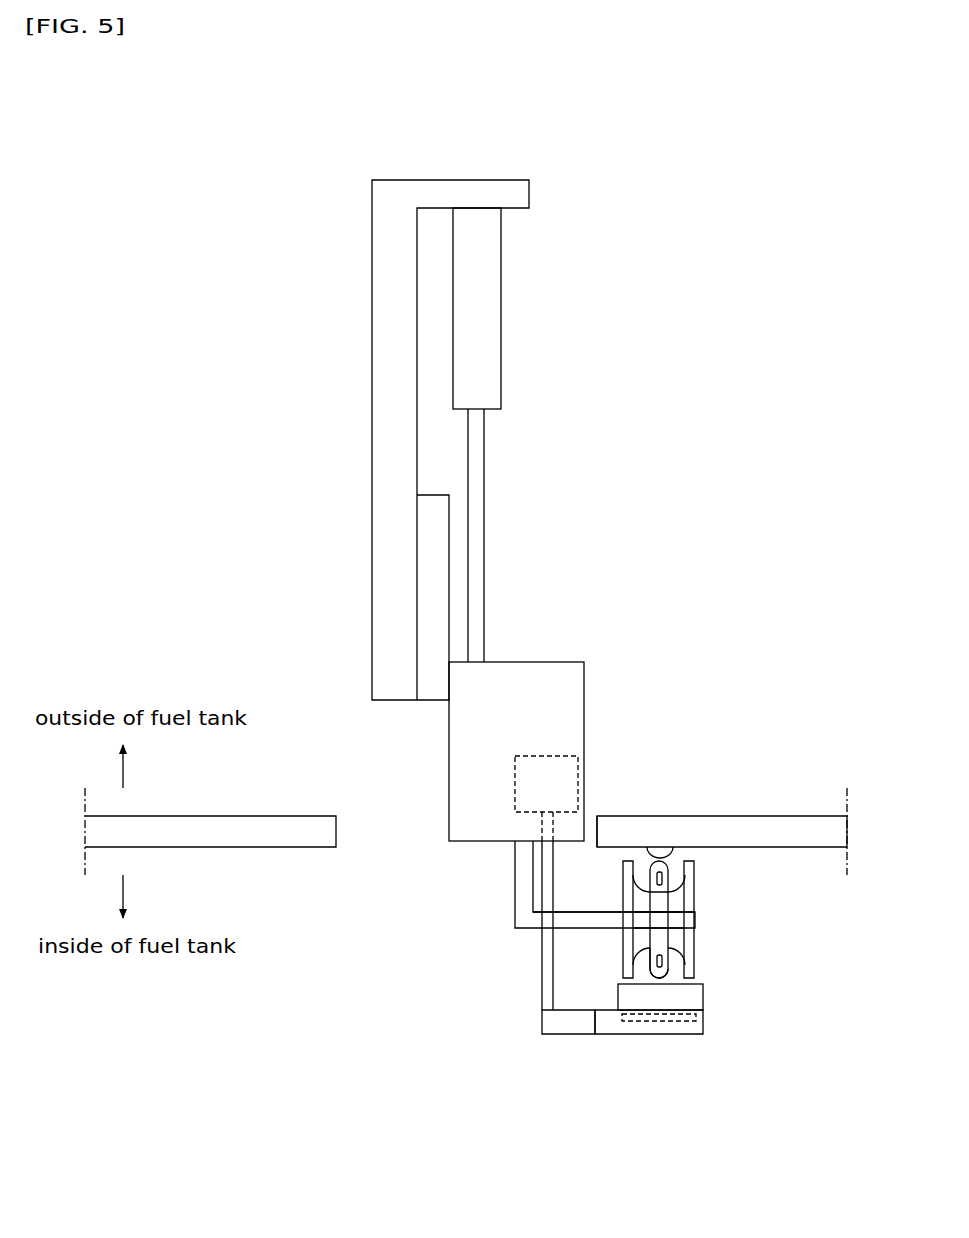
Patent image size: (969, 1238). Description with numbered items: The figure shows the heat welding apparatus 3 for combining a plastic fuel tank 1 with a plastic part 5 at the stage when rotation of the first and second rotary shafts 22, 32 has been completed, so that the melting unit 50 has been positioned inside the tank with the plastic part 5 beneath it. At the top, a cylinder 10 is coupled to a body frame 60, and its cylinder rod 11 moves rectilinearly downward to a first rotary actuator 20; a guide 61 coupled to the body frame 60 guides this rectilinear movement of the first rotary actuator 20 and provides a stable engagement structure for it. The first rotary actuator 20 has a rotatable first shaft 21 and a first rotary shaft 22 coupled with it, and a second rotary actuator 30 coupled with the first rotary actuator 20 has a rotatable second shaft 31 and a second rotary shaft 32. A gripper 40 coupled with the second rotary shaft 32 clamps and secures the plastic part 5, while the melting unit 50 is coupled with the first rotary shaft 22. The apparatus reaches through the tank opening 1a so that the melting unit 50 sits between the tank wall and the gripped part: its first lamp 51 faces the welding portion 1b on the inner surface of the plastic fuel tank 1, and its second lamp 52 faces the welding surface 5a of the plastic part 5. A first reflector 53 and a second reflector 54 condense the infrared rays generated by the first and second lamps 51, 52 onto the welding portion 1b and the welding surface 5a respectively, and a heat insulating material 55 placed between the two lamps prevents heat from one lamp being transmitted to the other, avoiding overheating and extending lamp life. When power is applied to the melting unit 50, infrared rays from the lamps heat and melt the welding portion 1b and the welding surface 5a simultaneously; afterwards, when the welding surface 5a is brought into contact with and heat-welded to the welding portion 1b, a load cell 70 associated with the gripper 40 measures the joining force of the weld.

The plastic fuel tank 1 is at (765, 815).
The opening of fuel tank 1a is at (597, 818).
The welding portion 1b is at (672, 856).
The heat welding apparatus 3 is at (490, 165).
The plastic part 5 is at (632, 993).
The welding surface 5a is at (676, 978).
The cylinder 10 is at (492, 278).
The cylinder rod 11 is at (475, 482).
The first rotary actuator 20 is at (552, 672).
The first shaft 21 is at (526, 905).
The first rotary shaft 22 is at (585, 929).
The second rotary actuator 30 is at (558, 756).
The second shaft 31 is at (547, 872).
The second rotary shaft 32 is at (565, 1025).
The gripper 40 is at (620, 1025).
The melting unit 50 is at (723, 928).
The first lamp 51 is at (663, 863).
The second lamp 52 is at (660, 978).
The first reflector 53 is at (677, 873).
The second reflector 54 is at (677, 965).
The heat insulating material 55 is at (685, 920).
The body frame 60 is at (388, 327).
The guide 61 is at (433, 528).
The load cell 70 is at (678, 1022).